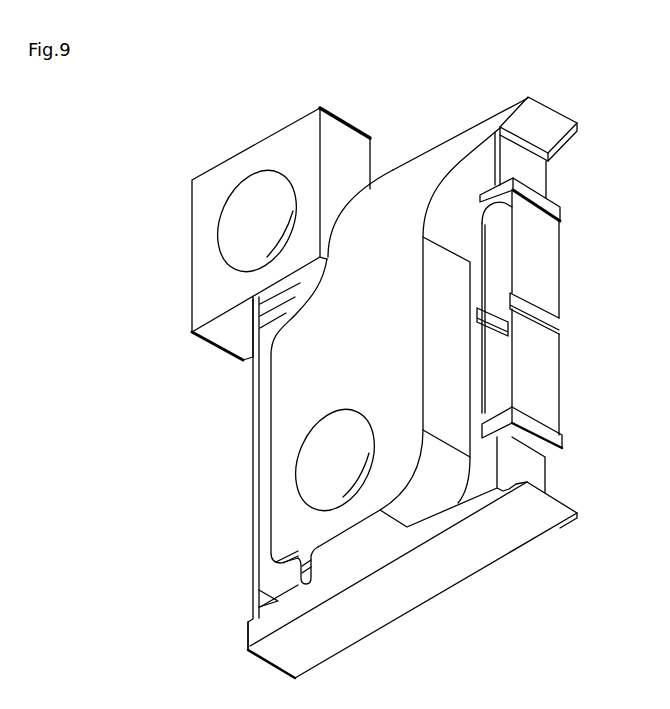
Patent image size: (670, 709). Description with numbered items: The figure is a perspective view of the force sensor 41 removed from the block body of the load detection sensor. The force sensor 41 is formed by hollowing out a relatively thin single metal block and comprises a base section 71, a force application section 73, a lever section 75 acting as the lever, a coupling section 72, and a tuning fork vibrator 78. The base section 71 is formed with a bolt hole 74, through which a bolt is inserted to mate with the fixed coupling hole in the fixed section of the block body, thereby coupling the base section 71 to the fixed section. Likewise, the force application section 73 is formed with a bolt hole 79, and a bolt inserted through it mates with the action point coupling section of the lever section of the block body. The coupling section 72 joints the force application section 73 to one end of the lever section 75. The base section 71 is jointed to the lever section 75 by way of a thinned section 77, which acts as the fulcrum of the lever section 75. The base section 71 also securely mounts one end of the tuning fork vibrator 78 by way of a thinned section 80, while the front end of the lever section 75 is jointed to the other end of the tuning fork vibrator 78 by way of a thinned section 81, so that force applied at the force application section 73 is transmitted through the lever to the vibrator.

The force sensor 41 is at (456, 113).
The base section 71 is at (393, 168).
The coupling section 72 is at (252, 440).
The force application section 73 is at (262, 137).
The bolt hole 74 is at (295, 475).
The lever section 75 is at (487, 571).
The thinned section 77 is at (327, 573).
The tuning fork vibrator 78 is at (578, 362).
The bolt hole 79 is at (222, 213).
The thinned section 80 is at (550, 177).
The thinned section 81 is at (550, 466).